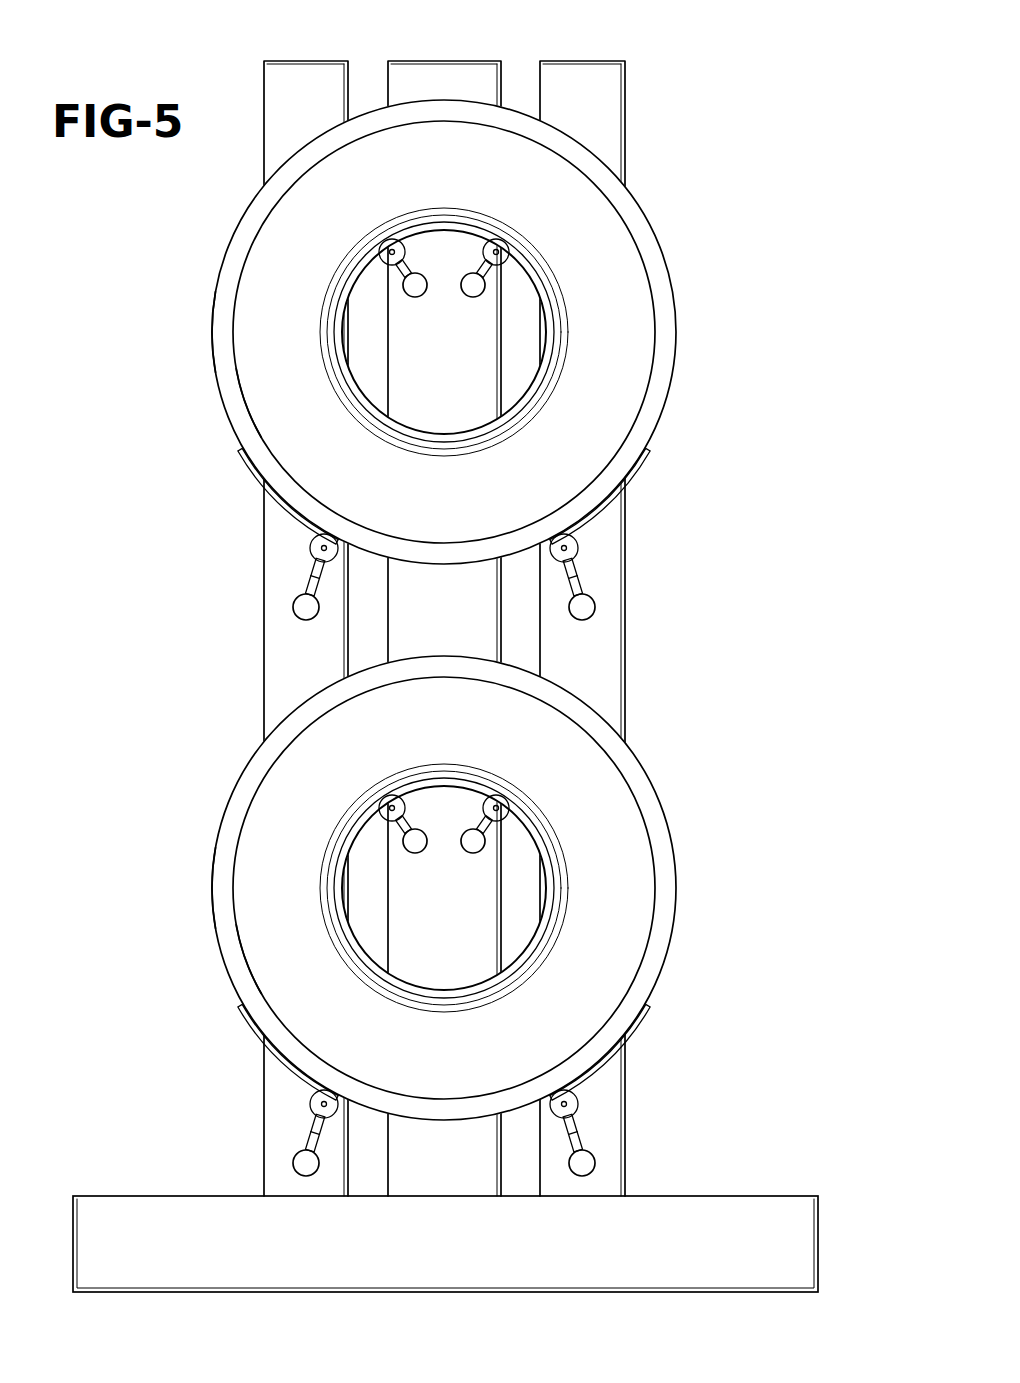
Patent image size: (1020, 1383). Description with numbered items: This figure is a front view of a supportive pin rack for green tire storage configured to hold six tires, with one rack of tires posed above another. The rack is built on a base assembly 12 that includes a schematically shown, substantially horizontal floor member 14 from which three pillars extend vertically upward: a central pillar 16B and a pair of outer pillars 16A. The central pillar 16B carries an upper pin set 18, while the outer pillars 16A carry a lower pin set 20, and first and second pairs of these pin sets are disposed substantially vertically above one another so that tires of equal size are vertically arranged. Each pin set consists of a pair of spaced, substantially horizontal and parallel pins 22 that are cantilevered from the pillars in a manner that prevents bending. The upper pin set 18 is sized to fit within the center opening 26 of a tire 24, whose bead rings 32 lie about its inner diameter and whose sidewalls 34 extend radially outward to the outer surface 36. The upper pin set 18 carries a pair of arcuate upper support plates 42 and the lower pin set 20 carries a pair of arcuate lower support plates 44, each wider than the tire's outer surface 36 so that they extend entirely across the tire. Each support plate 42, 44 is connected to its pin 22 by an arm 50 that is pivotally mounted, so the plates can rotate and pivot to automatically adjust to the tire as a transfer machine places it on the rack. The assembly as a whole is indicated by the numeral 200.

The base assembly 12 is at (748, 1185).
The floor member 14 is at (135, 1207).
The outer pillars 16A is at (303, 78).
The central pillar 16B is at (447, 78).
The upper pin set 18 is at (437, 326).
The lower pin set 20 is at (270, 591).
The pin 22 is at (402, 284).
The tire 24 is at (200, 298).
The center opening 26 is at (441, 436).
The bead rings 32 is at (418, 445).
The tire sidewalls 34 is at (280, 396).
The outer surface 36 is at (214, 367).
The upper support plates 42 is at (403, 283).
The lower support plates 44 is at (262, 472).
The arm 50 is at (408, 245).
The ring assembly 200 is at (719, 148).